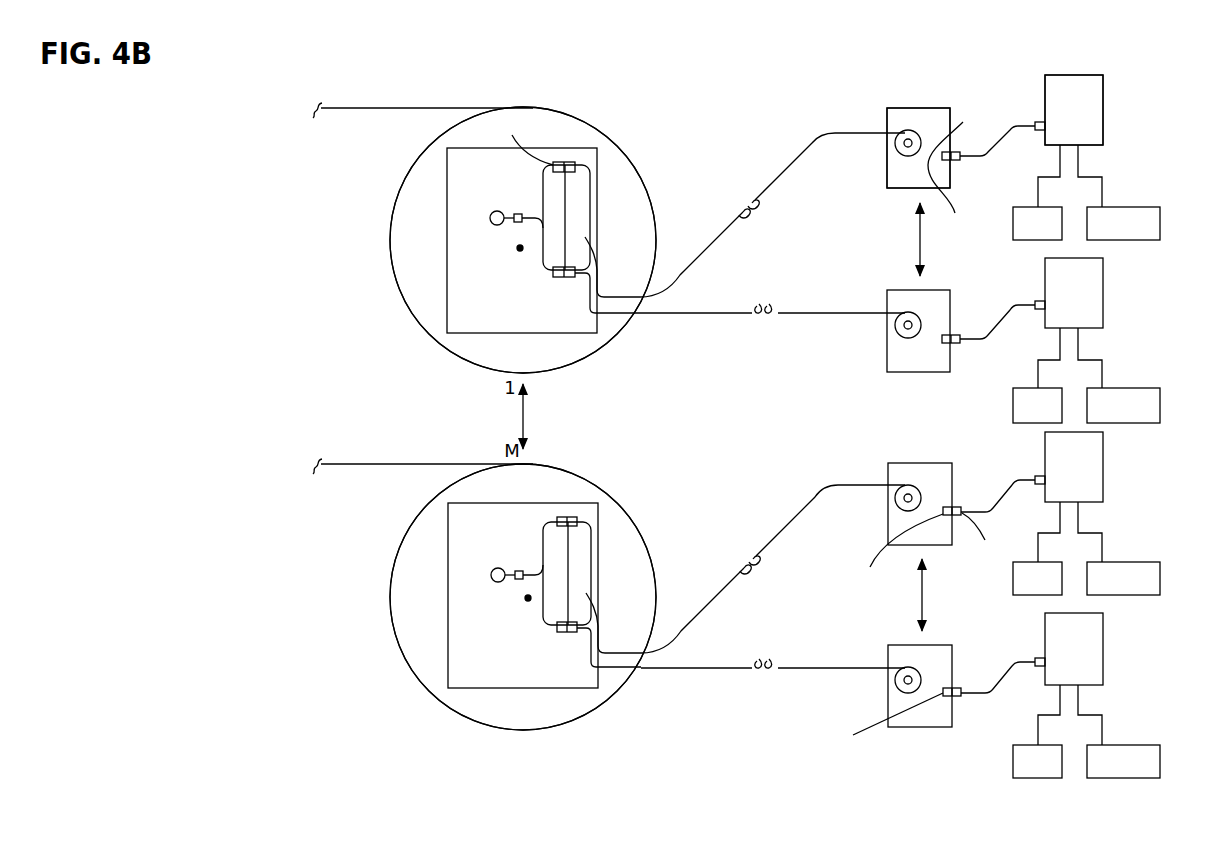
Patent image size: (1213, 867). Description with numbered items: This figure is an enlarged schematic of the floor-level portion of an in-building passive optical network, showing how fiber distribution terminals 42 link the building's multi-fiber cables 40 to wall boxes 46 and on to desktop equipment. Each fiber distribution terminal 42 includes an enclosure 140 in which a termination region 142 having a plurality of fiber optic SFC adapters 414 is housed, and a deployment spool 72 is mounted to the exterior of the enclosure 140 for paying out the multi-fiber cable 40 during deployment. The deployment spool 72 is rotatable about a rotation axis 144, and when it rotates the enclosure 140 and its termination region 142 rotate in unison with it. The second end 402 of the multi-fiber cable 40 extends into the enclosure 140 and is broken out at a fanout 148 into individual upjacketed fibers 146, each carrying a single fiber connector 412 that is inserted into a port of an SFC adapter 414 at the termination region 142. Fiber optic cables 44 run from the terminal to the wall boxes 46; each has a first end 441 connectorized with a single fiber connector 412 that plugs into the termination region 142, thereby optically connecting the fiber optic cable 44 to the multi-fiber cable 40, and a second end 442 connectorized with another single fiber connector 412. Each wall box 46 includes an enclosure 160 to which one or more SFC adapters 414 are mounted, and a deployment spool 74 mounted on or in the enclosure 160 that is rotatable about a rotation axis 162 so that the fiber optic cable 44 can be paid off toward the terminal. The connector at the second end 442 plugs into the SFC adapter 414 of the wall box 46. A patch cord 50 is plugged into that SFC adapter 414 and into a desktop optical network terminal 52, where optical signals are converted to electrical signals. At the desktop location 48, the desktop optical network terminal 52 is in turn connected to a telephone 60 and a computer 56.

The multi-fiber cable 40 is at (357, 108).
The fiber distribution terminal 42 is at (505, 88).
The deployment spool 72 is at (558, 110).
The enclosure 140 is at (450, 267).
The termination region 142 is at (572, 200).
The rotation axis 144 is at (520, 248).
The upjacketed fiber 146 is at (547, 270).
The fanout 148 is at (516, 213).
The SFC adapter 414 is at (567, 163).
The single fiber connector 412 is at (586, 237).
The second end of multi-fiber cable 402 is at (478, 745).
The first end of fiber optic cable 441 is at (578, 272).
The fiber optic cable 44 is at (827, 128).
The wall box 46 is at (941, 96).
The enclosure 160 is at (949, 113).
The deployment spool 74 is at (906, 129).
The rotation axis 162 is at (905, 146).
The second end of fiber optic cable 442 is at (931, 434).
The patch cord 50 is at (1000, 142).
The desktop optical network terminal 52 is at (1103, 87).
The desktop location 48 is at (1084, 67).
The telephone 60 is at (1022, 204).
The computer 56 is at (1160, 218).